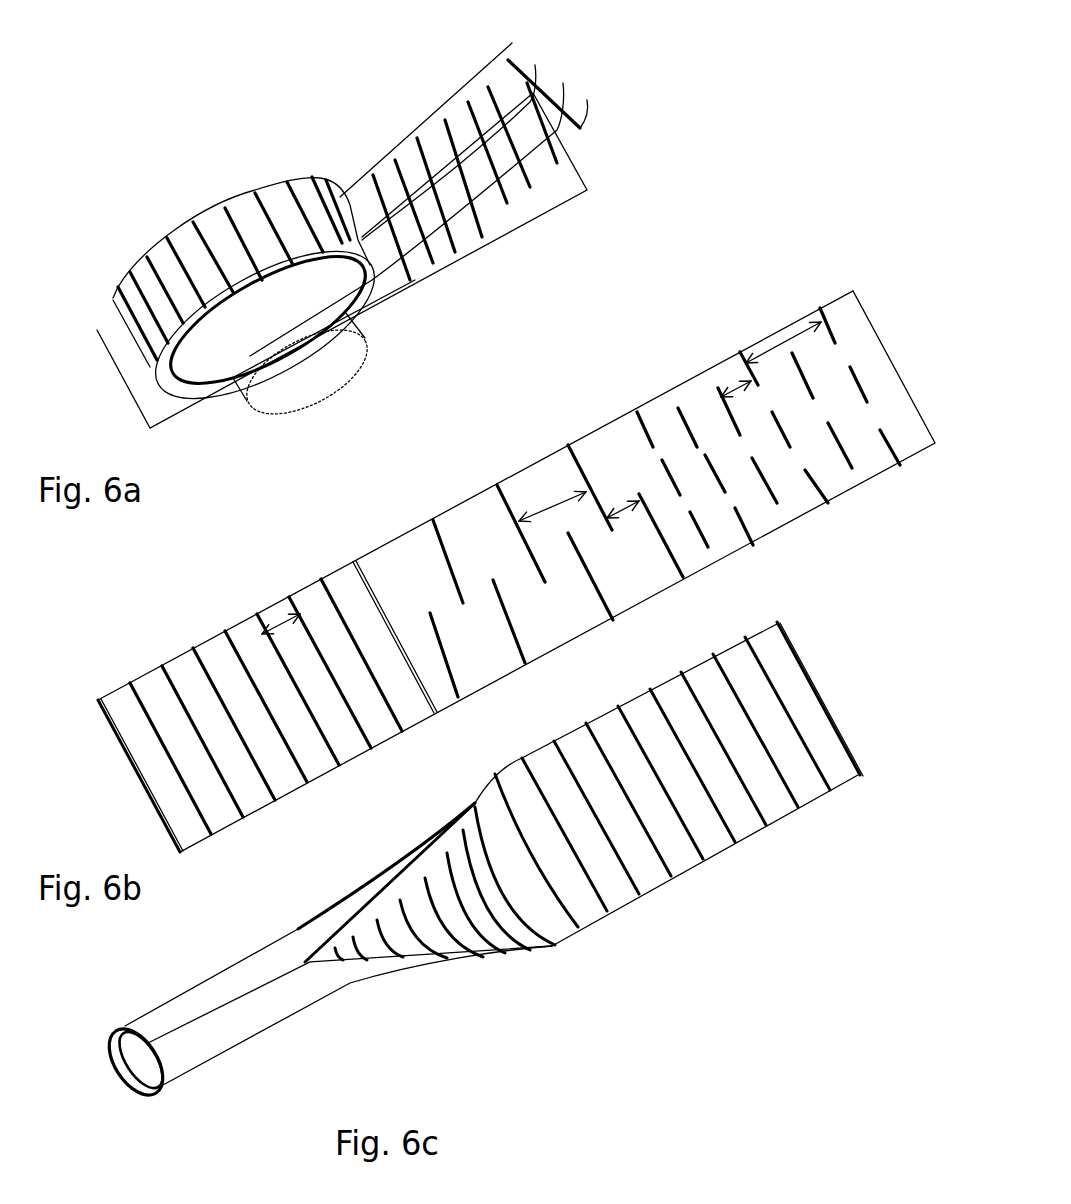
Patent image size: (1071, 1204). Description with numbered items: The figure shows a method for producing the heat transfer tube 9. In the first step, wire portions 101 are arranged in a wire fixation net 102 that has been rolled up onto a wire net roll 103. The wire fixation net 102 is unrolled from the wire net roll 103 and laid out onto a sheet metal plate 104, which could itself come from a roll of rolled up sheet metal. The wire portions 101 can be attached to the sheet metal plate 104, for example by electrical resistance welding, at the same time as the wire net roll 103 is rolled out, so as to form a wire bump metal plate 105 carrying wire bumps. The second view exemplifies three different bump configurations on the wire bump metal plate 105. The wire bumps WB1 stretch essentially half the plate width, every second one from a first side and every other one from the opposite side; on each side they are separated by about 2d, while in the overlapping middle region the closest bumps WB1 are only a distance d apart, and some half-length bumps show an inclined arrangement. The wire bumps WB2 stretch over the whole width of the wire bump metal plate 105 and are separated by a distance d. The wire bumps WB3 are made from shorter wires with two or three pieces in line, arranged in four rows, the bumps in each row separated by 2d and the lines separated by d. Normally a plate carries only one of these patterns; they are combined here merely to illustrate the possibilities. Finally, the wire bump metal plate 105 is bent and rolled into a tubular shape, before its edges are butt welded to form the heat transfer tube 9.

In FIG. 6A, the wire portions 101 is at (257, 204).
In FIG. 6A, the wire fixation net 102 is at (477, 86).
In FIG. 6A, the wire net roll 103 is at (397, 236).
In FIG. 6A, the sheet metal plate 104 is at (560, 180).
In FIG. 6B, the wire bump metal plate 105 is at (483, 537).
In FIG. 6C, the wire bump metal plate 105 is at (680, 853).
In FIG. 6C, the heat transfer tube 9 is at (287, 998).
In FIG. 6B, the wire bumps of the first configuration WB1 is at (515, 522).
In FIG. 6B, the wire bumps of the second pattern WB2 is at (205, 682).
In FIG. 6B, the wire bumps of the third kind WB3 is at (728, 422).
In FIG. 6B, the distance d is at (280, 623).
In FIG. 6B, the distance 2d is at (546, 508).